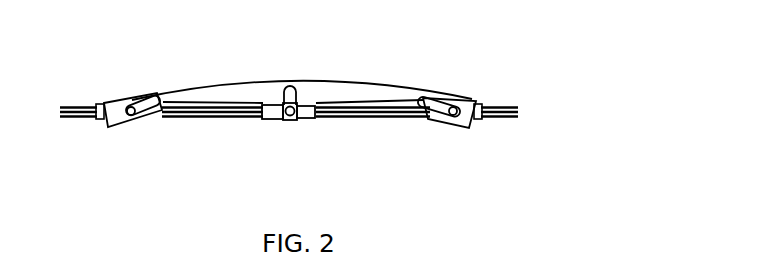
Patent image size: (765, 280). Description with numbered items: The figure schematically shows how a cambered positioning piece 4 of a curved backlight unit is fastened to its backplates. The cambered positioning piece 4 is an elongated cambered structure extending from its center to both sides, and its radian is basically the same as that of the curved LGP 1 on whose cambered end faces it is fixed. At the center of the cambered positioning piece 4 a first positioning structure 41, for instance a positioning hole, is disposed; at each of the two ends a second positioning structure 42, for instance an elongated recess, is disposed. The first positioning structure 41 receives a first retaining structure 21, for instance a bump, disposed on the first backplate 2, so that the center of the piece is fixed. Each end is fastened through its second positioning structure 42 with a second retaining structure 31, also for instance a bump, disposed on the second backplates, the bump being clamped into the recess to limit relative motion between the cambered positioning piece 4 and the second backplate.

The LGP 1 is at (510, 108).
The first backplate 2 is at (267, 120).
The first retaining structure 21 is at (298, 120).
The second retaining structure 31 is at (116, 126).
The cambered positioning piece 4 is at (372, 92).
The first positioning structure 41 is at (292, 96).
The second positioning structure 42 is at (132, 100).